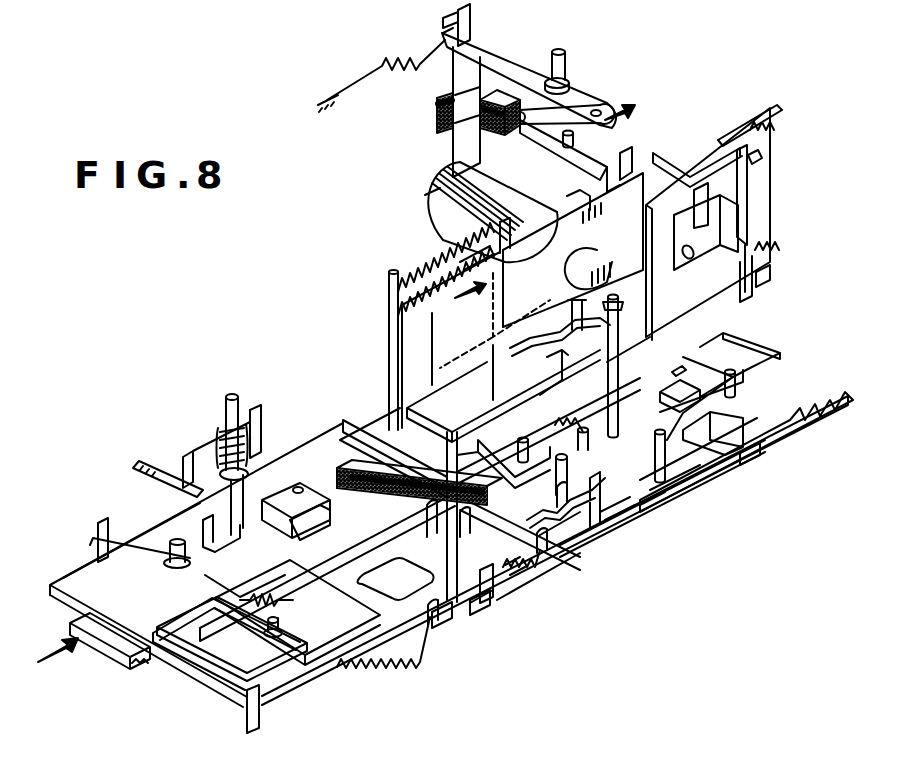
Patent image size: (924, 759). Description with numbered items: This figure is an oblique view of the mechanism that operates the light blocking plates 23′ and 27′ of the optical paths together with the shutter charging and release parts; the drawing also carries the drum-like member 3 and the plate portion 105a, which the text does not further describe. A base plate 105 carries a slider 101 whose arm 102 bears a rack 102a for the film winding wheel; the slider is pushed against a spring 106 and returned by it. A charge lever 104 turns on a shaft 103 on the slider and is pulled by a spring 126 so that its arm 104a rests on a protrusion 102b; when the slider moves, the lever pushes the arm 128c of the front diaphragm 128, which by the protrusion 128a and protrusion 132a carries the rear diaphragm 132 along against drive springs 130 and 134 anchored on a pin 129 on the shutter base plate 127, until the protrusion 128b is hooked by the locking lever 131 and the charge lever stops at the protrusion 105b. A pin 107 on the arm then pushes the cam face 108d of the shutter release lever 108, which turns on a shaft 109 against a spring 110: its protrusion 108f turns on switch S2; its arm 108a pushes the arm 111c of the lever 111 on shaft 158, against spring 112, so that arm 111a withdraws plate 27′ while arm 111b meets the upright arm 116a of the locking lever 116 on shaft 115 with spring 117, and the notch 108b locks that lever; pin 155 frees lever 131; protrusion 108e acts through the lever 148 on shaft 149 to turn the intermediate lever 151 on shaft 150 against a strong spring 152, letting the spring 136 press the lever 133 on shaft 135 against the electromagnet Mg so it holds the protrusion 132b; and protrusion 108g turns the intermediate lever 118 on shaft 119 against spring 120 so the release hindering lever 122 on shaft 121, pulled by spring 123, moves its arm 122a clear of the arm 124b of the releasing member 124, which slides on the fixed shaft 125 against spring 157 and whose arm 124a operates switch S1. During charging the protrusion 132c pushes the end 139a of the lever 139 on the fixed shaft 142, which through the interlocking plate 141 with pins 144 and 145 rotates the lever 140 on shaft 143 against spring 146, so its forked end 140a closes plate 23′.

The rotary drum 3 is at (438, 212).
The light blocking plate 23′ is at (455, 140).
The light blocking plate 27′ is at (385, 432).
The slider 101 is at (112, 640).
The arm 102 is at (288, 686).
The rack 102a is at (835, 403).
The protrusion 102b is at (498, 582).
The shaft 103 is at (297, 488).
The charge lever 104 is at (305, 500).
The arm 104a is at (472, 603).
The base plate 105 is at (88, 580).
The plate portion 105a is at (205, 640).
The protrusion 105b is at (560, 545).
The spring 106 is at (388, 640).
The pin 107 is at (668, 468).
The shutter release lever 108 is at (738, 462).
The arm 108a is at (455, 598).
The notch 108b is at (372, 660).
The cam face 108d is at (672, 498).
The protrusion 108e is at (762, 448).
The protrusion 108f is at (682, 392).
The protrusion 108g is at (652, 500).
The shaft 109 is at (575, 490).
The spring 110 is at (622, 505).
The lever 111 is at (330, 665).
The arm 111a is at (395, 475).
The arm 111b is at (302, 524).
The arm 111c is at (405, 625).
The spring 112 is at (235, 655).
The shaft 115 is at (190, 546).
The locking lever 116 is at (172, 560).
The upright arm 116a is at (440, 622).
The spring 117 is at (135, 548).
The intermediate lever 118 is at (622, 342).
The shaft 119 is at (540, 340).
The spring 120 is at (478, 378).
The shaft 121 is at (530, 450).
The release hindering lever 122 is at (498, 445).
The arm 122a is at (244, 512).
The spring 123 is at (520, 400).
The releasing member 124 is at (253, 412).
The arm 124a is at (184, 468).
The arm 124b is at (205, 595).
The fixed shaft 125 is at (230, 402).
The spring 126 is at (545, 558).
The base plate 127 is at (375, 405).
The front diaphragm 128 is at (405, 358).
The protrusion 128a is at (470, 258).
The protrusion 128b is at (494, 360).
The arm 128c is at (518, 572).
The pin 129 is at (388, 302).
The drive spring 130 is at (437, 312).
The locking lever 131 is at (548, 370).
The rear diaphragm 132 is at (644, 203).
The protrusion 132a is at (432, 196).
The protrusion 132b is at (662, 156).
The protrusion 132c is at (588, 226).
The lever 133 is at (752, 196).
The drive spring 134 is at (430, 282).
The shaft 135 is at (762, 157).
The spring 136 is at (760, 122).
The lever 139 is at (545, 138).
The end 139a is at (614, 165).
The lever 140 is at (520, 58).
The forked end 140a is at (450, 44).
The interlocking plate 141 is at (580, 108).
The fixed shaft 142 is at (576, 135).
The shaft 143 is at (562, 52).
The pin 144 is at (518, 122).
The pin 145 is at (600, 110).
The spring 146 is at (412, 56).
The lever 148 is at (770, 345).
The shaft 149 is at (737, 375).
The shaft 150 is at (772, 278).
The intermediate lever 151 is at (762, 262).
The spring 152 is at (774, 246).
The pin 155 is at (618, 302).
The spring 157 is at (220, 445).
The shaft 158 is at (248, 696).
The electromagnet Mg is at (720, 245).
The switch S1 is at (138, 468).
The switch S2 is at (682, 366).